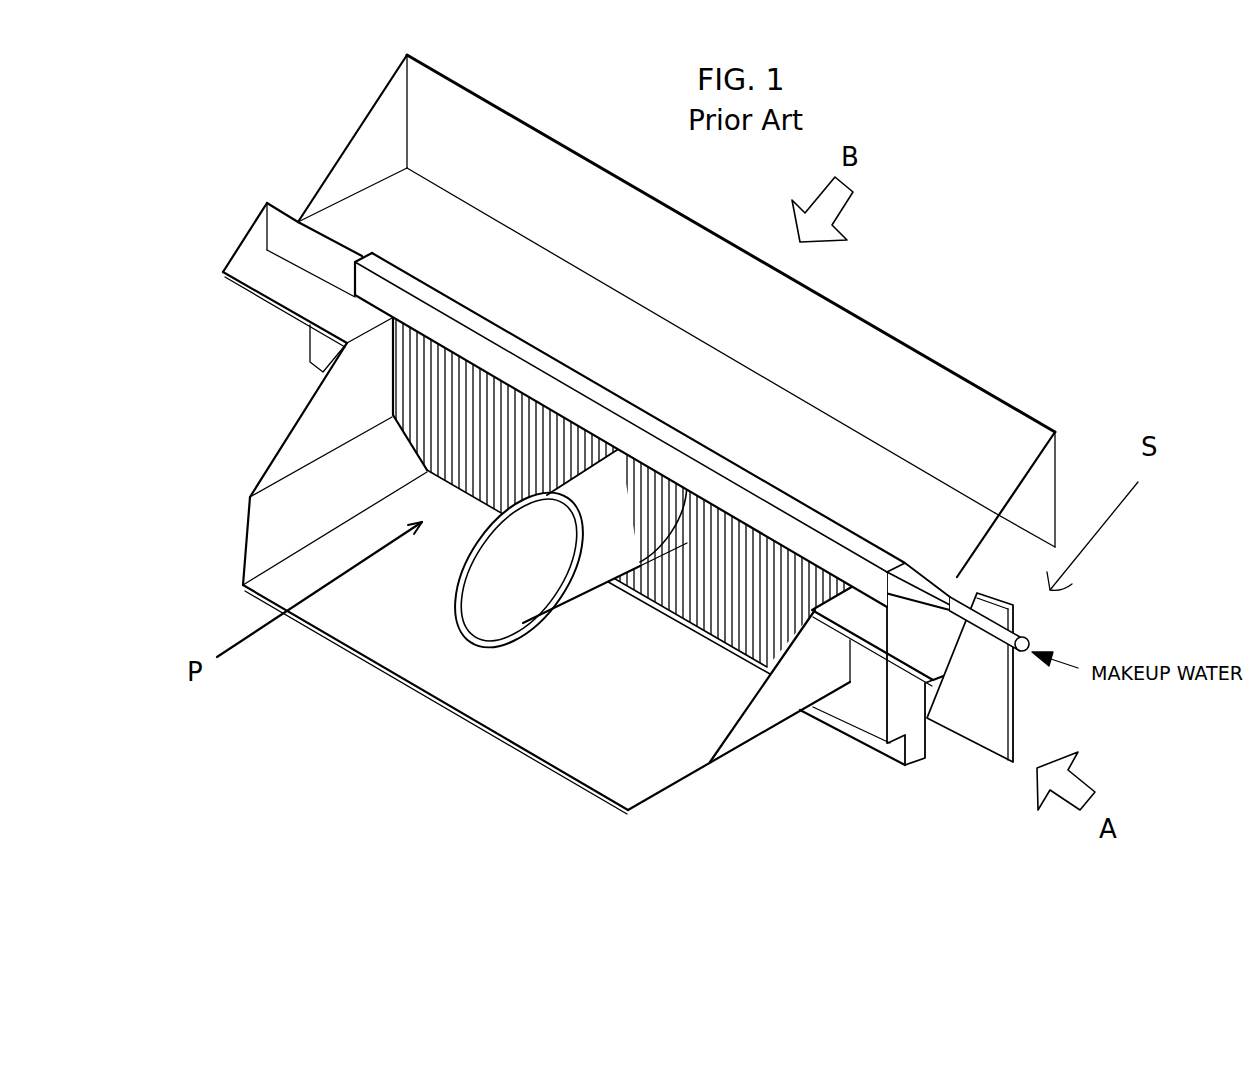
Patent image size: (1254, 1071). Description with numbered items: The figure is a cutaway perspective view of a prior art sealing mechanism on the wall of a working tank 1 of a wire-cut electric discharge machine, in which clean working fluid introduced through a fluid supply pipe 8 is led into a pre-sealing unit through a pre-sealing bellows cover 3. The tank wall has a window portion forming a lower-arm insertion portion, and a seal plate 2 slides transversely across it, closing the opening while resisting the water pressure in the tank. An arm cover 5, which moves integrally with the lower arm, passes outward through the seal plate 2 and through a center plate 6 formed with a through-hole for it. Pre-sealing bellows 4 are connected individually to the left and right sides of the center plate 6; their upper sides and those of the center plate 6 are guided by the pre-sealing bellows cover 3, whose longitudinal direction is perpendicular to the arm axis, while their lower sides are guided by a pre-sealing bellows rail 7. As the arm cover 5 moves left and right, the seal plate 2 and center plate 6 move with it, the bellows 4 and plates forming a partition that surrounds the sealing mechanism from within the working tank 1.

The working tank 1 is at (322, 178).
The seal plate 2 is at (318, 352).
The pre-sealing bellows cover 3 is at (447, 328).
The pre-sealing bellows 4 is at (447, 412).
The arm cover 5 is at (455, 622).
The center plate 6 is at (673, 580).
The pre-sealing bellows rail 7 is at (757, 667).
The fluid supply pipe 8 is at (1018, 632).